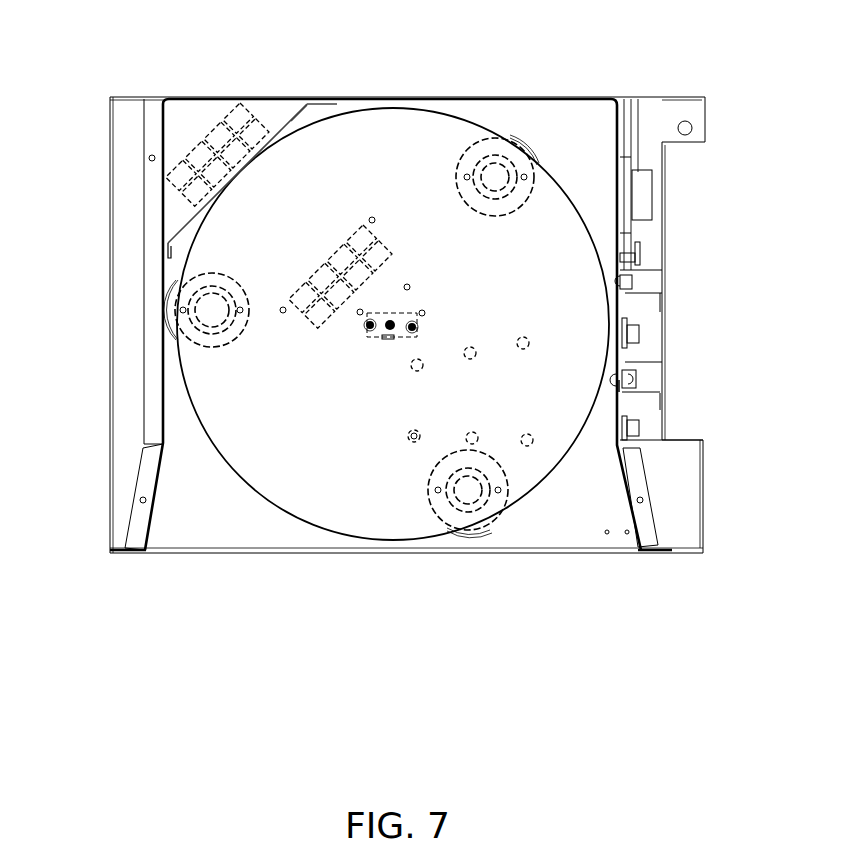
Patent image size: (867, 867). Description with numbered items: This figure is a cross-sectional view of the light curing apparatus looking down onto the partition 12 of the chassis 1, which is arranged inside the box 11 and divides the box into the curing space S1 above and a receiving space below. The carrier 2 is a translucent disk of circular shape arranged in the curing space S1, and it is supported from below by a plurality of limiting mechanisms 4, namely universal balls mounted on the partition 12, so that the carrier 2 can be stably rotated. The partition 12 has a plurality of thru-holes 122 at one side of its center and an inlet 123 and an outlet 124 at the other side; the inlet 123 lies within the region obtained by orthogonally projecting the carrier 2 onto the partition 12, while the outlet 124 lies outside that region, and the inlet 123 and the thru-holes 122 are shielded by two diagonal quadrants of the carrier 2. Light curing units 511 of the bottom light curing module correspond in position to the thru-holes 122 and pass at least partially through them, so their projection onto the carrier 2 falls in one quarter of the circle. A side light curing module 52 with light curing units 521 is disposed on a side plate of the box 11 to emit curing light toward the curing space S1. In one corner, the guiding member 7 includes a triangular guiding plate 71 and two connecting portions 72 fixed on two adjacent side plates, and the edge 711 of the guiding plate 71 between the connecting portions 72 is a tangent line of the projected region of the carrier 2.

The chassis 1 is at (62, 630).
The box 11 is at (710, 122).
The partition 12 is at (190, 540).
The thru-holes 122 is at (410, 440).
The inlet 123 is at (364, 217).
The outlet 124 is at (231, 105).
The carrier 2 is at (448, 142).
The limiting mechanisms 4 is at (497, 528).
The side light curing module 52 is at (660, 378).
The light curing units 521 is at (614, 378).
The light curing units 511 is at (415, 443).
The guiding member 7 is at (44, 197).
The guiding plate 71 is at (173, 210).
The edge 711 is at (300, 112).
The connecting portions 72 is at (167, 257).
The curing space S1 is at (177, 519).